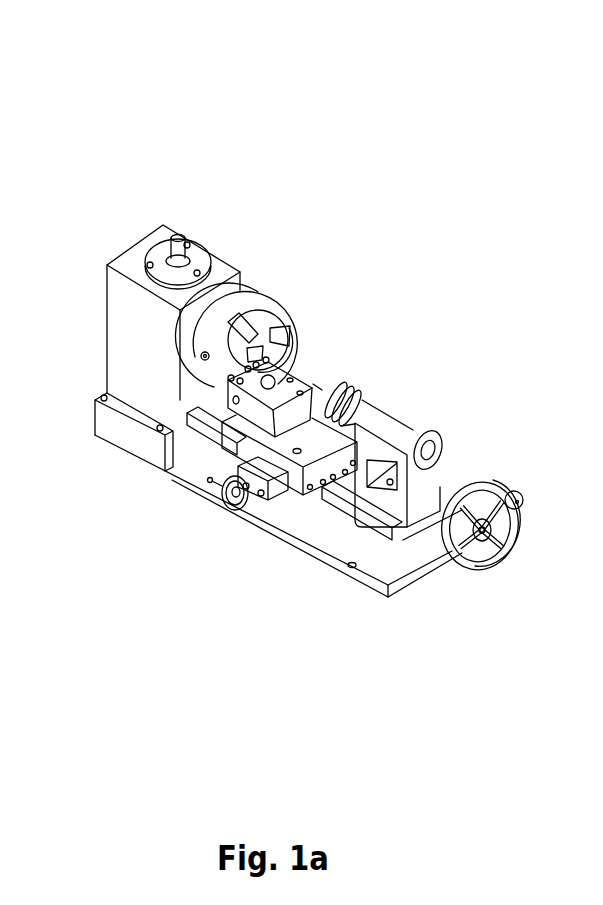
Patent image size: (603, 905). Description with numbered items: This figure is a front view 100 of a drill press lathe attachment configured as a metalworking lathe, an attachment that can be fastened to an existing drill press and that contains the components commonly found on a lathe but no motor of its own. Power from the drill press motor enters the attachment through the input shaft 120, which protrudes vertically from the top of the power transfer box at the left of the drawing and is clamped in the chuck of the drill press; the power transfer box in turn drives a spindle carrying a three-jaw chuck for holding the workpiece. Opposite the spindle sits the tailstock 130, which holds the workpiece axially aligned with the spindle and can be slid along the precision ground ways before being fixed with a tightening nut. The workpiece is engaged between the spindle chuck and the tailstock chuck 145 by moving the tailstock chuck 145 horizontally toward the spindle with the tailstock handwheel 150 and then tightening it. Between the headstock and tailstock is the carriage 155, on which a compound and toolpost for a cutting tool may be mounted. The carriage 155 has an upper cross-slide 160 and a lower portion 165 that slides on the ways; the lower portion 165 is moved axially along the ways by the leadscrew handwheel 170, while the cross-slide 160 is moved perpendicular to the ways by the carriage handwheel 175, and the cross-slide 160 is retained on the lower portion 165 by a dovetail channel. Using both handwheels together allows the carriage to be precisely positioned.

The front view 100 is at (316, 158).
The input shaft 120 is at (178, 238).
The tailstock 130 is at (400, 403).
The tailstock chuck 145 is at (345, 381).
The tailstock handwheel 150 is at (448, 437).
The carriage 155 is at (322, 388).
The cross-slide 160 is at (258, 450).
The lower portion 165 is at (278, 503).
The leadscrew handwheel 170 is at (473, 572).
The carriage handwheel 175 is at (228, 503).